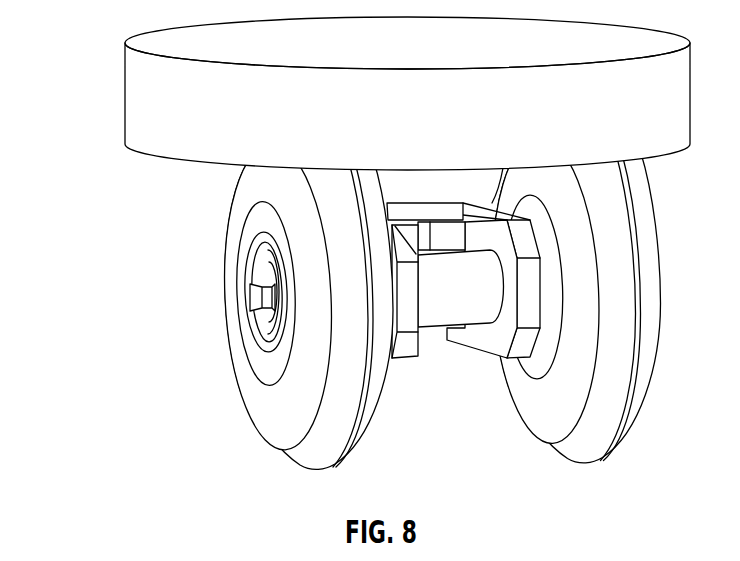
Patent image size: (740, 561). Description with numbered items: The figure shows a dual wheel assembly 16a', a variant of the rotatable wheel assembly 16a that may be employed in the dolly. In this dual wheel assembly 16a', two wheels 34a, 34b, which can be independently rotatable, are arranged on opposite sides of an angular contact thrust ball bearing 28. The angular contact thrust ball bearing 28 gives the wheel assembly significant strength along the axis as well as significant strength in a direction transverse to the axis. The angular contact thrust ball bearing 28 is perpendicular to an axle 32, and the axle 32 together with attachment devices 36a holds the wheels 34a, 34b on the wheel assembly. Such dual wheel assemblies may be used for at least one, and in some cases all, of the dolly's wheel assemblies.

The dual wheel assembly 16a' is at (364, 184).
The caster wheel assembly 16a is at (364, 184).
The angular contact thrust ball bearing 28 is at (442, 197).
The axle 32 is at (470, 301).
The wheel 34a is at (270, 410).
The wheel 34b is at (538, 407).
The attachment device 36a is at (254, 292).